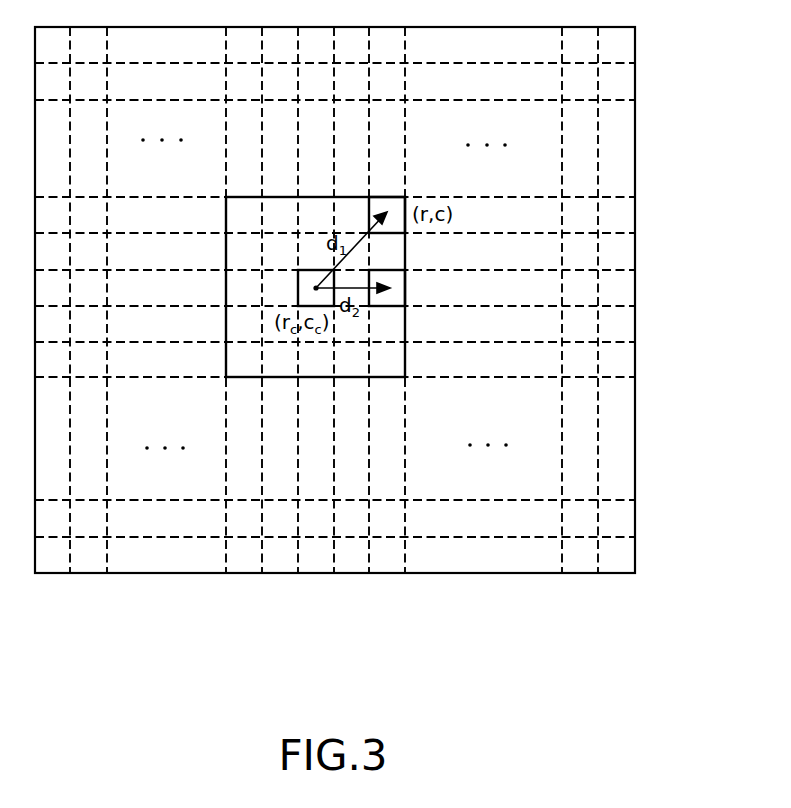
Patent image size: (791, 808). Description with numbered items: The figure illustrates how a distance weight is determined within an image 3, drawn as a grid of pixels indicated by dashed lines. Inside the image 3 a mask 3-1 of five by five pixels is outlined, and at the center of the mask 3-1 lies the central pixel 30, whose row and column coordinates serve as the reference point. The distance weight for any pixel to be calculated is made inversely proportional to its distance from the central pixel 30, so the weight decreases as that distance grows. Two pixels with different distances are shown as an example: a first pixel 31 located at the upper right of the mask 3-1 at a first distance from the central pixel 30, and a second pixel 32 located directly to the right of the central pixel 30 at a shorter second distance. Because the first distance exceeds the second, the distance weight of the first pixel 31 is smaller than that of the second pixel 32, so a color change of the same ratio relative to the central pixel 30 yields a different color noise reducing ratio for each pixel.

The image 3 is at (636, 152).
The mask 3-1 is at (226, 197).
The central pixel 30 is at (298, 290).
The first pixel 31 is at (389, 197).
The second pixel 32 is at (406, 287).